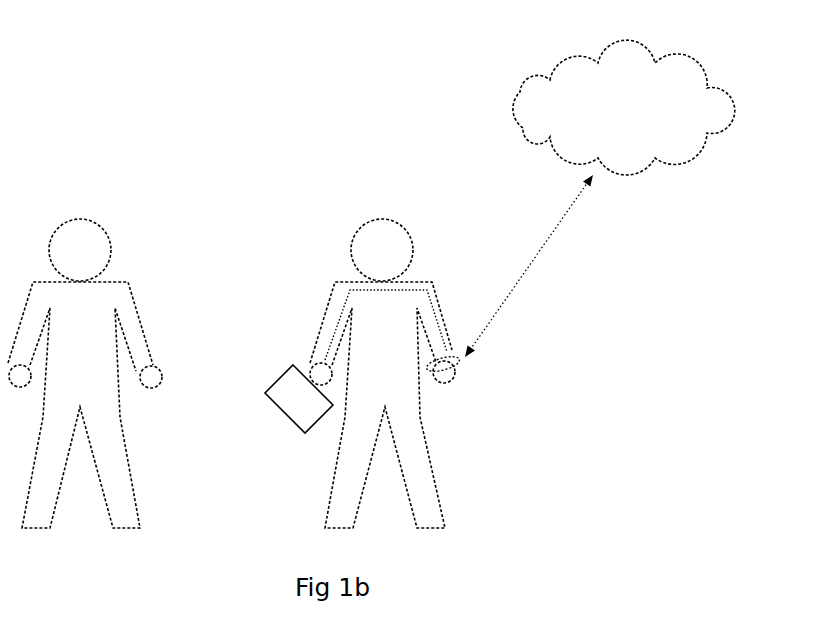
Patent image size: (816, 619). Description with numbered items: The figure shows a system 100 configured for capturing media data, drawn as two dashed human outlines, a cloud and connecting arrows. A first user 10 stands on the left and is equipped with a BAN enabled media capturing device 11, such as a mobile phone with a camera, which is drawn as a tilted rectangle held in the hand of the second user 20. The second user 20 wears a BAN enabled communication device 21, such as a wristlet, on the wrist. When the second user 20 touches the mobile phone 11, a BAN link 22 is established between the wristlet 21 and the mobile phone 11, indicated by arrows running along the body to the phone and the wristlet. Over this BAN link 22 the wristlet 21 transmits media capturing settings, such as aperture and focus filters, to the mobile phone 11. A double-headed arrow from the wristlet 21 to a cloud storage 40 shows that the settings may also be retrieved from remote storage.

The system 100 is at (228, 158).
The first user 10 is at (85, 352).
The second user 20 is at (399, 352).
The BAN link 22 is at (445, 351).
The BAN enabled media capturing device 11 is at (299, 399).
The BAN enabled communication device 21 is at (472, 368).
The cloud storage 40 is at (624, 107).